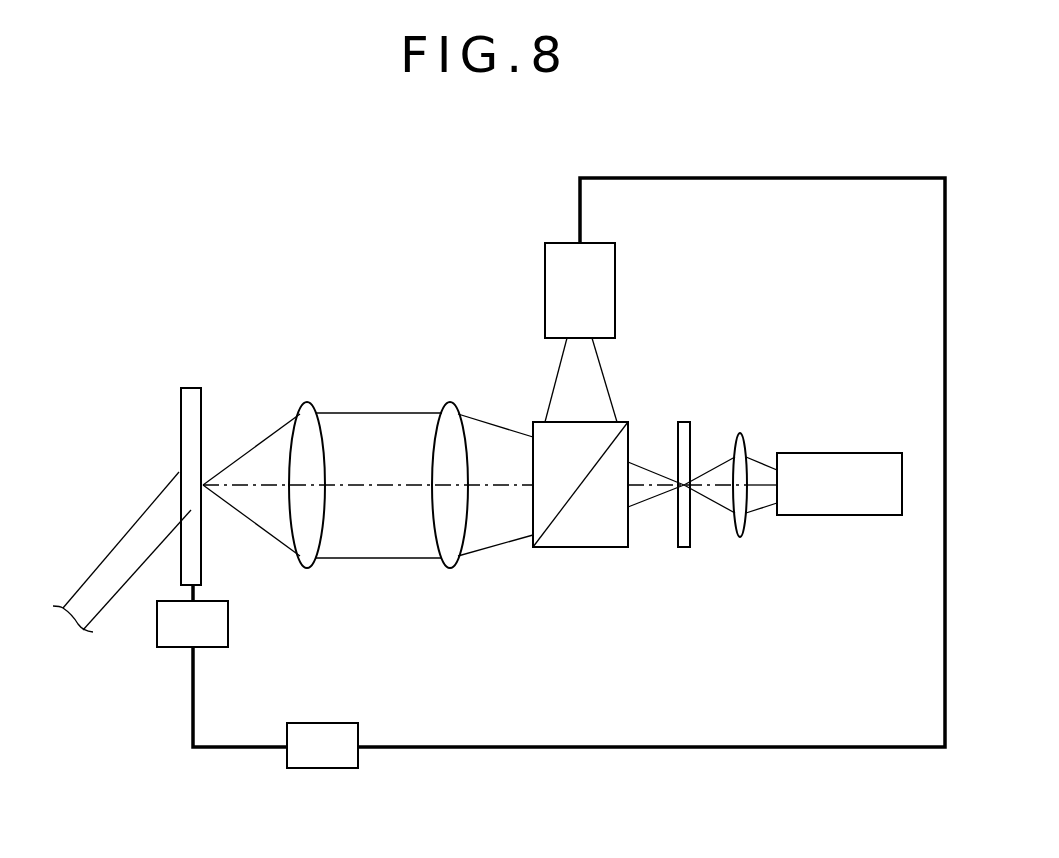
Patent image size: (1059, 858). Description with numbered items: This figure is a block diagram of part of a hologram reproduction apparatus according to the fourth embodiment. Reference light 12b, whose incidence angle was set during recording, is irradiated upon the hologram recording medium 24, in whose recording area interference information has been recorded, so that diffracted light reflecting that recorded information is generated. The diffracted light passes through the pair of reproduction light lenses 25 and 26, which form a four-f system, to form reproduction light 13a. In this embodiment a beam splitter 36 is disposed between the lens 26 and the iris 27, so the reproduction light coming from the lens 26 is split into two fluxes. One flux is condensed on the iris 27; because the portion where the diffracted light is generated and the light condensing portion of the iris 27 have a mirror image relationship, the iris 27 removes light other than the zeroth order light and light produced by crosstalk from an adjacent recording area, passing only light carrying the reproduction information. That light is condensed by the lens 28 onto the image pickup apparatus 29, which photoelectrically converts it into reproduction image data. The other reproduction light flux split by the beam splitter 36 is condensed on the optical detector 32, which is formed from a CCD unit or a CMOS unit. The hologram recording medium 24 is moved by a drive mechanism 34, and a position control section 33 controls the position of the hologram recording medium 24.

The reference light 12b is at (128, 530).
The hologram recording medium 24 is at (193, 386).
The reproduction light lens 25 is at (307, 400).
The reproduction light 13a is at (373, 412).
The reproduction light lens 26 is at (452, 400).
The beam splitter 36 is at (577, 550).
The optical detector 32 is at (617, 257).
The iris 27 is at (685, 420).
The lens 28 is at (742, 432).
The image pickup apparatus 29 is at (838, 453).
The drive mechanism 34 is at (229, 623).
The position control section 33 is at (305, 770).